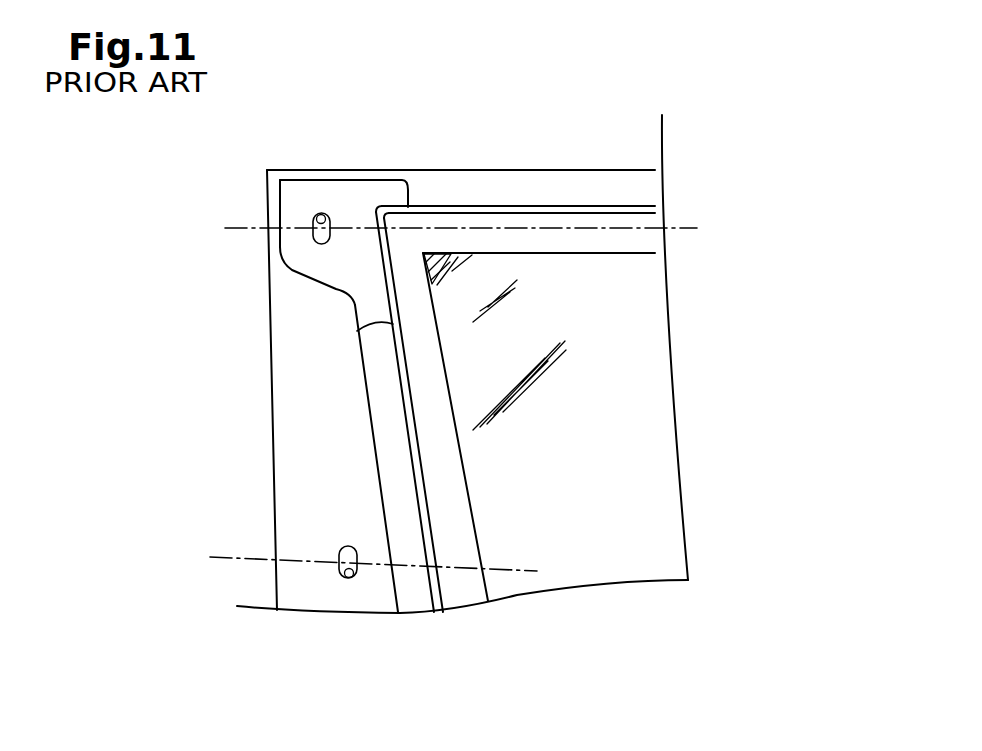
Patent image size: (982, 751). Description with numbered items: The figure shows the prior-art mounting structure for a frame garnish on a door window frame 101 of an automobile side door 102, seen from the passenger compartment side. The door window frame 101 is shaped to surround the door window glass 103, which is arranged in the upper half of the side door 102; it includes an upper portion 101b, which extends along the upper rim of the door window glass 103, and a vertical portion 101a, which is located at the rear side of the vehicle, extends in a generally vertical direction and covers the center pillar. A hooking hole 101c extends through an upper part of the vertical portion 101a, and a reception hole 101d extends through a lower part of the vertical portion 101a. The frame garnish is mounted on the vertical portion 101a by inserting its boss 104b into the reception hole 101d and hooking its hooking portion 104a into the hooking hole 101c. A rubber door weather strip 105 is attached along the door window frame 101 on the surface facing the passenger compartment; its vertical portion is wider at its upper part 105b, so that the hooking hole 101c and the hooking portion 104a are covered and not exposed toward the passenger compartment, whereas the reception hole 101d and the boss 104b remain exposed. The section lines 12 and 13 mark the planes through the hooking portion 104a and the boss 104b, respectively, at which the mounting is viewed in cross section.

The section line XII-XII 12 is at (235, 227).
The section line XIII-XIII 13 is at (228, 557).
The door window frame 101 is at (264, 331).
The vertical portion 101a is at (288, 398).
The upper portion 101b is at (616, 243).
The hooking hole 101c is at (323, 211).
The reception hole 101d is at (349, 578).
The side door 102 is at (725, 148).
The door window glass 103 is at (628, 426).
The hooking portion 104a is at (328, 222).
The boss 104b is at (340, 567).
The door weather strip 105 is at (301, 280).
The upper part 105b is at (303, 244).